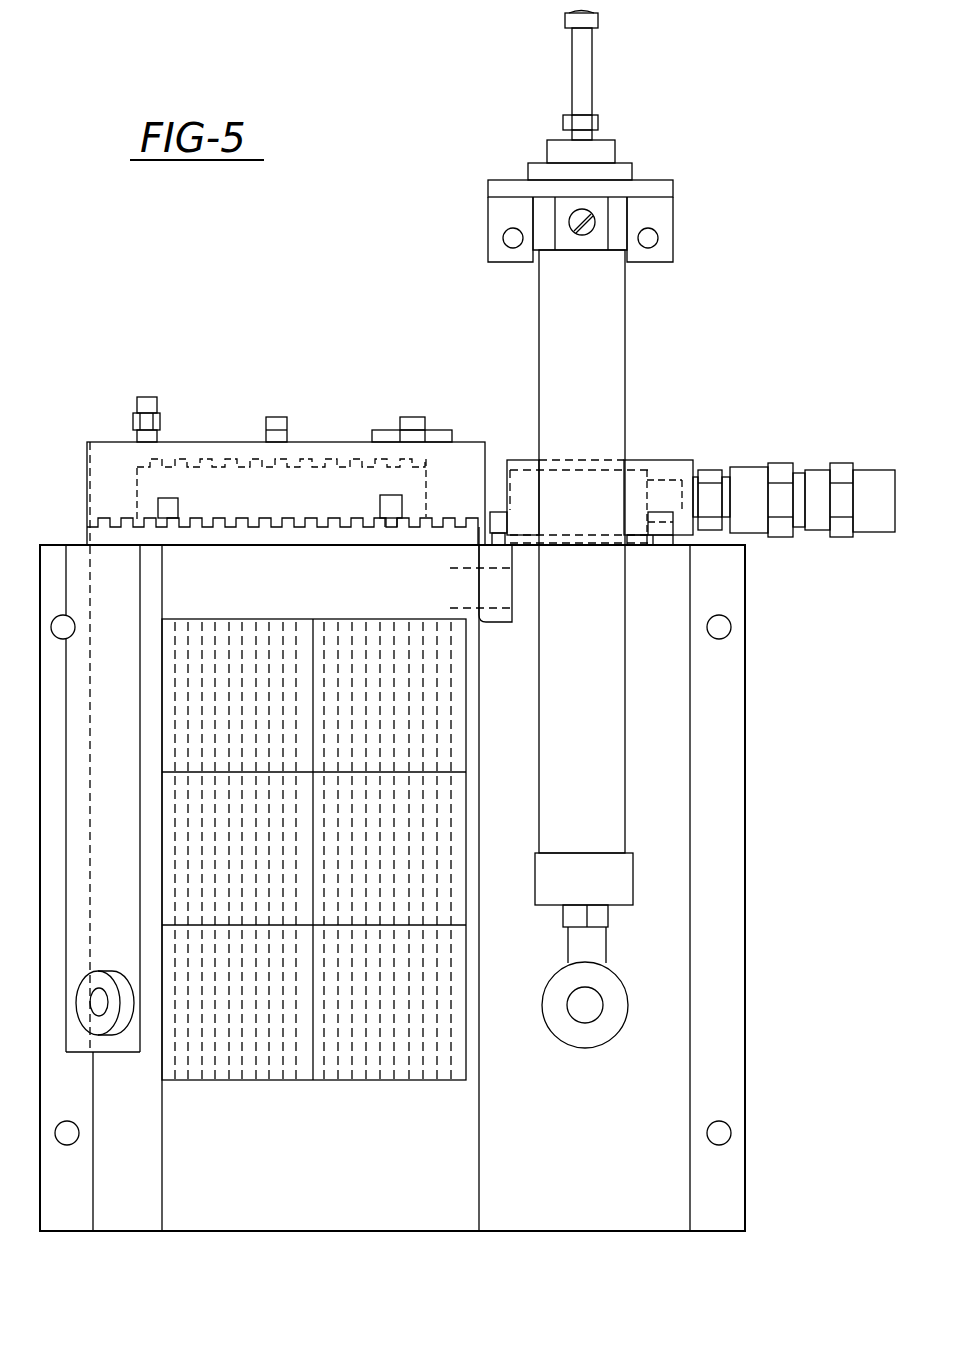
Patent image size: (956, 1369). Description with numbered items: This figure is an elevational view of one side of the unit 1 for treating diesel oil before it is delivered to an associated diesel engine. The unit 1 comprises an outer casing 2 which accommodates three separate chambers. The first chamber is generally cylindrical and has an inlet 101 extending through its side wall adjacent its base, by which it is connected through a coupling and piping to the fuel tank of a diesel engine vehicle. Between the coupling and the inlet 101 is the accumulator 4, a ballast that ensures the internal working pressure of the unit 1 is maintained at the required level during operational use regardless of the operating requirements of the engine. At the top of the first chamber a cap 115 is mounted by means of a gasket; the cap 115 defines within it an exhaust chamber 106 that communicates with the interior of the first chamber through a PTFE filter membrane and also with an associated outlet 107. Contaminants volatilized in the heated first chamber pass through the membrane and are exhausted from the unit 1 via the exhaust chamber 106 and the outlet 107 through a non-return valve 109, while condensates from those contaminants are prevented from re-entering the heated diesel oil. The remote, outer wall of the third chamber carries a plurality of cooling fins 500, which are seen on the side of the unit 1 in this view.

The unit 1 is at (377, 362).
The outer casing 2 is at (738, 875).
The accumulator 4 is at (617, 378).
The inlet 101 is at (575, 1013).
The exhaust chamber 106 is at (638, 480).
The outlet 107 is at (675, 490).
The non-return valve 109 is at (812, 540).
The cap 115 is at (515, 460).
The cooling fins 500 is at (383, 1047).